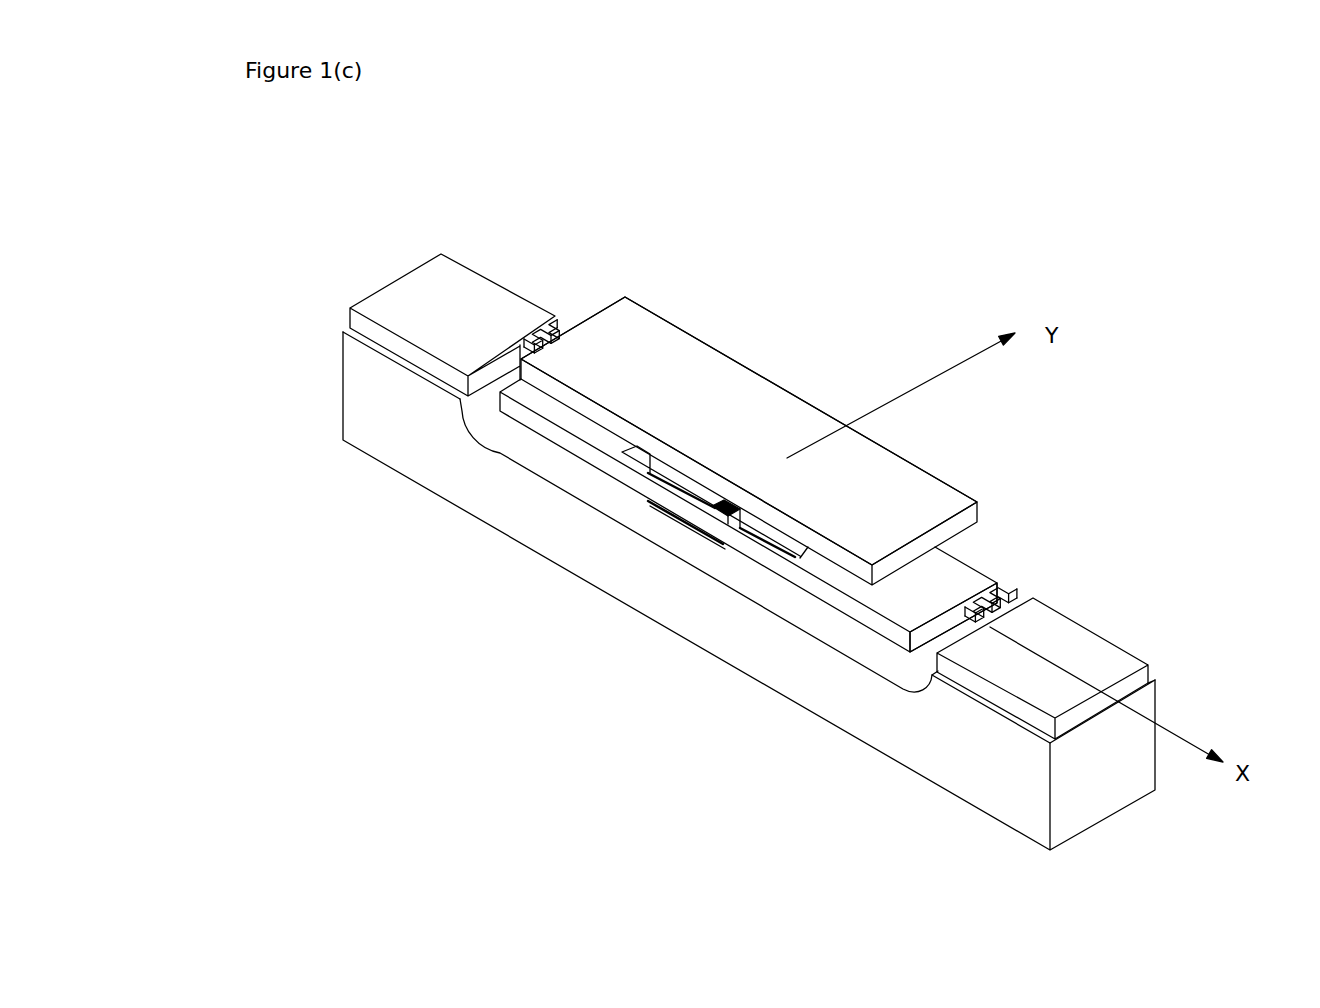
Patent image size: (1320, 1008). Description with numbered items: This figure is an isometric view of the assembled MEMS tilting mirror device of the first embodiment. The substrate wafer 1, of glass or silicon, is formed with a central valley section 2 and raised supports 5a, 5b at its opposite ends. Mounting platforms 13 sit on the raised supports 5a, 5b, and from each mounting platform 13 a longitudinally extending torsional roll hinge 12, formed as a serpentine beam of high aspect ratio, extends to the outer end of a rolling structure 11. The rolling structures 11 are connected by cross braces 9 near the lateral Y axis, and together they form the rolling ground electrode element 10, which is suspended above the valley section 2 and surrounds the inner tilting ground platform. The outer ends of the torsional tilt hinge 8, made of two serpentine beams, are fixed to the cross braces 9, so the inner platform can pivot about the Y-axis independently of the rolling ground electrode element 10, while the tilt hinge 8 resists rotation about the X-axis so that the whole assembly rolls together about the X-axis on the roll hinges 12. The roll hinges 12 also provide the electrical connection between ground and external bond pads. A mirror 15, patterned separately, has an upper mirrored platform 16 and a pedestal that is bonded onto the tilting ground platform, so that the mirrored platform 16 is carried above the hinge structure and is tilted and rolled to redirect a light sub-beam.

The substrate wafer 1 is at (395, 422).
The valley section 2 is at (563, 486).
The raised support 5a is at (357, 345).
The raised support 5b is at (1142, 705).
The torsional tilt hinge 8 is at (717, 523).
The cross brace 9 is at (648, 485).
The rolling ground electrode element 10 is at (981, 545).
The rolling structure 11 is at (558, 422).
The torsional roll hinge 12 is at (557, 323).
The mounting platform 13 is at (444, 282).
The mirror 15 is at (926, 447).
The upper mirrored platform 16 is at (662, 332).